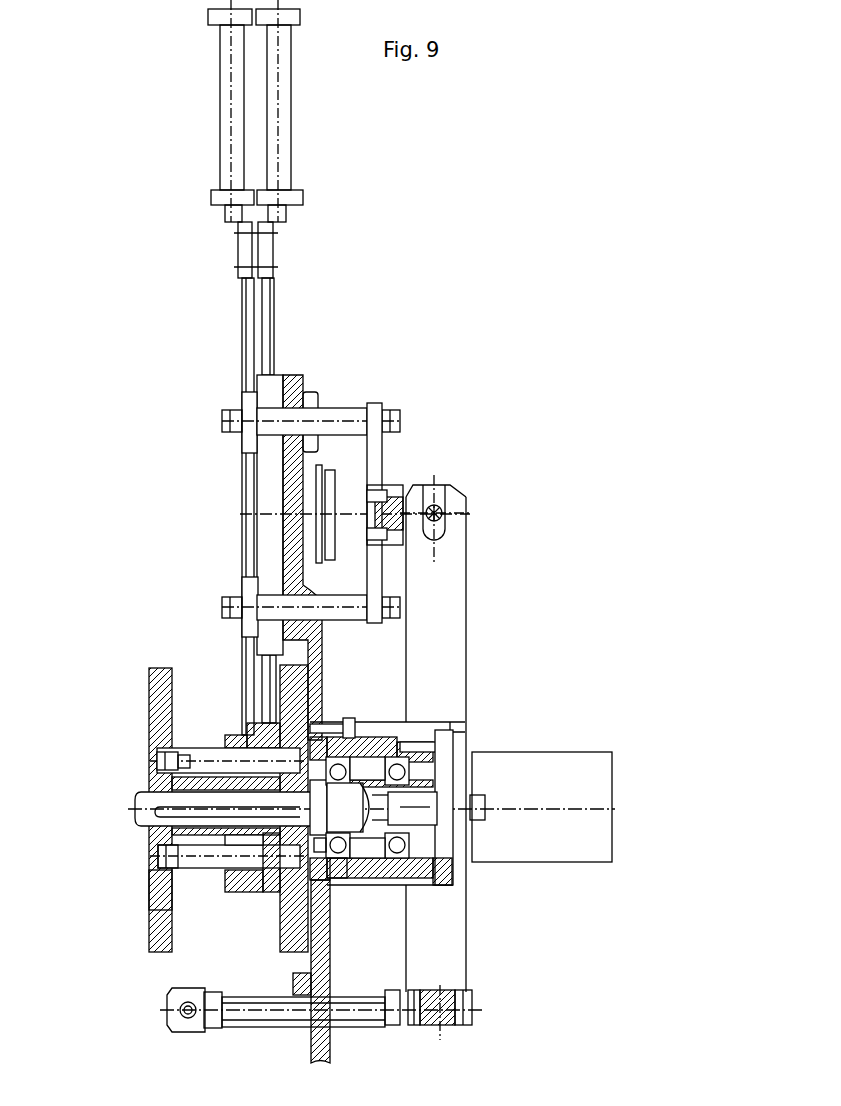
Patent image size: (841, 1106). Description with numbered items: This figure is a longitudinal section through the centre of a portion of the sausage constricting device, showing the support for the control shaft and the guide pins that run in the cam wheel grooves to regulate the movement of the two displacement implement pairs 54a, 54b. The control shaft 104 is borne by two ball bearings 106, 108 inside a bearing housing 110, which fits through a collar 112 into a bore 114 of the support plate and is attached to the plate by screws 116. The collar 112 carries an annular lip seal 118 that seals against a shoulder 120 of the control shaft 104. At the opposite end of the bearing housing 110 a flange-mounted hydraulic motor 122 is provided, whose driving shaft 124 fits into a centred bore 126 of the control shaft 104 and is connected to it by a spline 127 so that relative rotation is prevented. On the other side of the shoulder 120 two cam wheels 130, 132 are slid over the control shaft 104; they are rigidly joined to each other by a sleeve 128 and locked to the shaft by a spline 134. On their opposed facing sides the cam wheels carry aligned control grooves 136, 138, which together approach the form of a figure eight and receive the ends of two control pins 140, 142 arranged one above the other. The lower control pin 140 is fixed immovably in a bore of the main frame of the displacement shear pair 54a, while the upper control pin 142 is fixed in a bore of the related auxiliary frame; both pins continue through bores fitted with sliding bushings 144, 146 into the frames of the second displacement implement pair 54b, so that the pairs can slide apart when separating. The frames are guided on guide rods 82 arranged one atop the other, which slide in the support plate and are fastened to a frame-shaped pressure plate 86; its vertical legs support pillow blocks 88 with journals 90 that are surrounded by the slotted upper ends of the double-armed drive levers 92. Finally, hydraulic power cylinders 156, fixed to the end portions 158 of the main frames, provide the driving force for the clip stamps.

The hydraulic power cylinders 156 is at (228, 90).
The end portions 158 is at (235, 215).
The displacement implement pair 54a is at (277, 340).
The displacement implement pair 54b is at (238, 350).
The guide rods 82 is at (345, 412).
The pressure plate 86 is at (373, 455).
The pillow blocks 88 is at (412, 483).
The journals 90 is at (438, 510).
The double-armed drive levers 92 is at (452, 606).
The control shaft 104 is at (155, 800).
The ball bearing 106 is at (372, 725).
The ball bearing 108 is at (387, 758).
The bearing housing 110 is at (395, 735).
The collar 112 is at (283, 912).
The bore 114 is at (335, 880).
The screws 116 is at (348, 720).
The annular lip seal 118 is at (318, 850).
The shoulder 120 is at (270, 895).
The hydraulic motor 122 is at (614, 776).
The driving shaft 124 is at (425, 813).
The centred bore 126 is at (430, 830).
The spline 127 is at (433, 782).
The sleeve 128 is at (173, 842).
The cam wheel 130 is at (297, 948).
The cam wheel 132 is at (153, 950).
The spline 134 is at (167, 812).
The control groove 136 is at (253, 748).
The control groove 138 is at (155, 760).
The lower control pin 140 is at (173, 893).
The upper control pin 142 is at (213, 752).
The sliding bushing 144 is at (227, 870).
The sliding bushing 146 is at (237, 755).